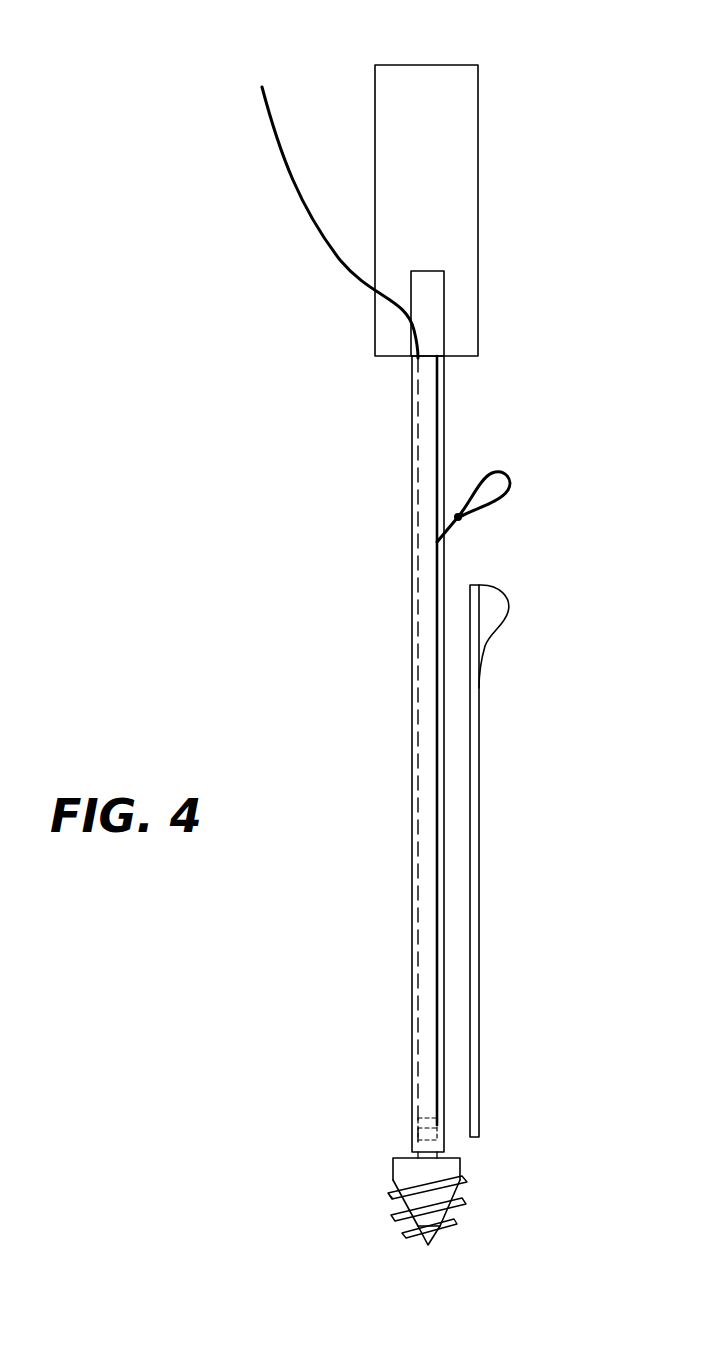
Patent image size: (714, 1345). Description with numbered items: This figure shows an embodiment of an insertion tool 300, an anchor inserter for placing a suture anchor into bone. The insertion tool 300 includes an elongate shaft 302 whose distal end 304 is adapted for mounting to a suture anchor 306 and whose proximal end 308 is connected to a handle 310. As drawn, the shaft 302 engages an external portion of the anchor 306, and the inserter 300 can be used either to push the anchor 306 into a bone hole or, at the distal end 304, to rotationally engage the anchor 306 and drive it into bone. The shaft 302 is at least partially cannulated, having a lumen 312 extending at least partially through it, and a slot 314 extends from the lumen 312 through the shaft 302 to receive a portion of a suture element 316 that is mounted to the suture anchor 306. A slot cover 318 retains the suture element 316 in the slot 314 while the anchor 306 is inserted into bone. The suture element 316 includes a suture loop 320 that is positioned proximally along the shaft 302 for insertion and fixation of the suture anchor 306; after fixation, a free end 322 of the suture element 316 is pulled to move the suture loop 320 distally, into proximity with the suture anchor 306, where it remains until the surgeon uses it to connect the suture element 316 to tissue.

The insertion tool 300 is at (175, 68).
The shaft 302 is at (408, 618).
The distal end 304 is at (377, 1128).
The suture anchor 306 is at (395, 1197).
The proximal end 308 is at (364, 368).
The handle 310 is at (468, 160).
The lumen 312 is at (428, 460).
The slot 314 is at (444, 399).
The suture element 316 is at (287, 188).
The slot cover 318 is at (479, 748).
The suture loop 320 is at (510, 489).
The free end 322 is at (298, 94).